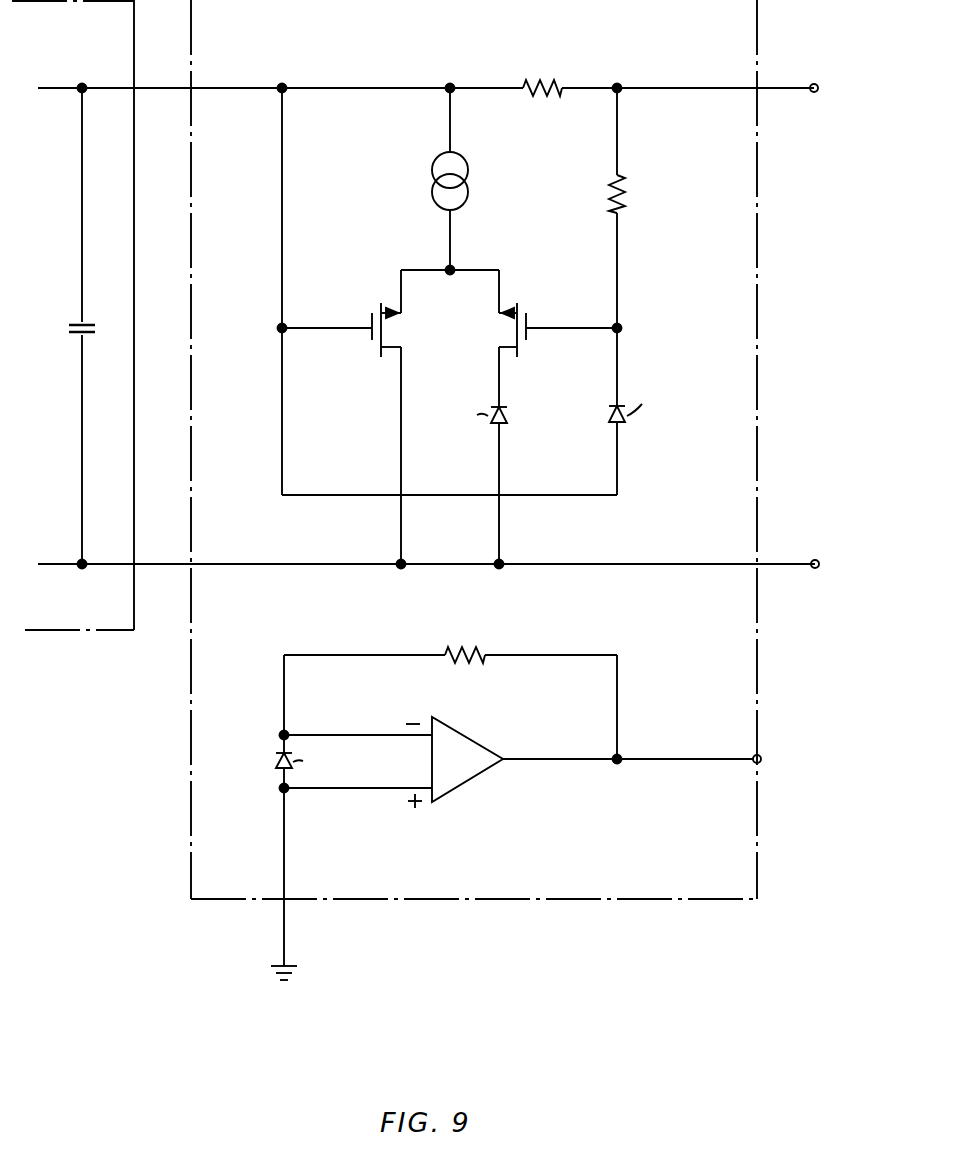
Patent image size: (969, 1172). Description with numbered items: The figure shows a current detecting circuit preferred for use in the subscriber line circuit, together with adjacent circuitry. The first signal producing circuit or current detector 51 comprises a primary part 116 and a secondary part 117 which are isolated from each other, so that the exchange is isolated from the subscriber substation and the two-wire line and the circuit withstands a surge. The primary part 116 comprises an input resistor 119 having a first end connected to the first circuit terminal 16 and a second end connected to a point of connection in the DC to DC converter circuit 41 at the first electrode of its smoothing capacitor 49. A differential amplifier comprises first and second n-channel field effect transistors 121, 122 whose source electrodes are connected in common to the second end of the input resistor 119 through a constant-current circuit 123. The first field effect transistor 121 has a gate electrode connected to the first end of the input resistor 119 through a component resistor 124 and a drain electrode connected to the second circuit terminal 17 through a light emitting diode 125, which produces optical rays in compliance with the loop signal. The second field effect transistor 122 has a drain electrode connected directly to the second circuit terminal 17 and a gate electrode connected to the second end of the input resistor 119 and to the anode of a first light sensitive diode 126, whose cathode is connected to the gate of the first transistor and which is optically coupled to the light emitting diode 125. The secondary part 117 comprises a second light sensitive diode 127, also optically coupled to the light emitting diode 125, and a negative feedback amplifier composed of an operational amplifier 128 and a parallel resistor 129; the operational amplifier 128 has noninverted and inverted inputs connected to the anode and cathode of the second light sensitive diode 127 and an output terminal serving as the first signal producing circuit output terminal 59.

The first circuit terminal 16 is at (819, 84).
The second circuit terminal 17 is at (820, 559).
The DC to DC converter circuit 41 is at (80, 632).
The smoothing capacitor 49 is at (72, 336).
The current detector 51 is at (490, 900).
The first signal producing circuit output terminal 59 is at (762, 754).
The primary part 116 is at (338, 582).
The secondary part 117 is at (498, 814).
The input resistor 119 is at (545, 95).
The first n-channel field effect transistor 121 is at (540, 306).
The second n-channel field effect transistor 122 is at (370, 338).
The constant-current circuit 123 is at (432, 195).
The component resistor 124 is at (628, 200).
The light emitting diode 125 is at (505, 425).
The first light sensitive diode 126 is at (625, 425).
The second light sensitive diode 127 is at (275, 763).
The operational amplifier 128 is at (478, 736).
The parallel resistor 129 is at (466, 645).